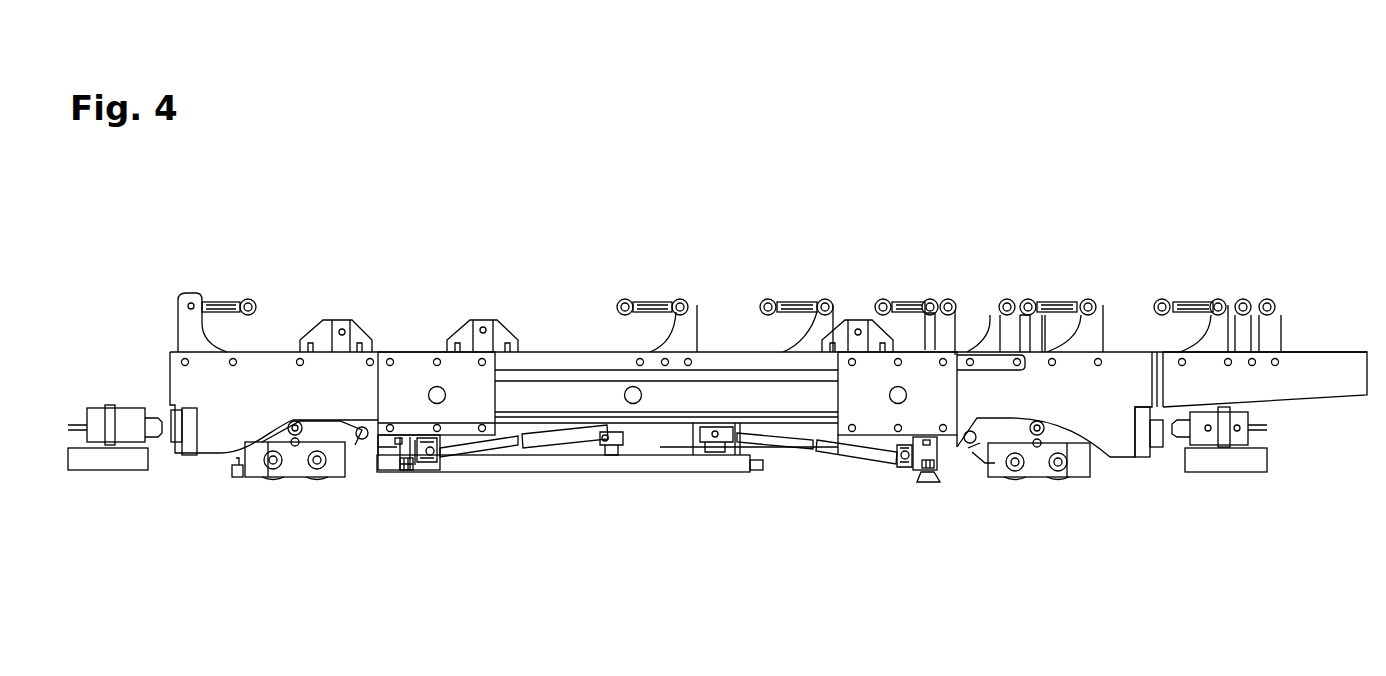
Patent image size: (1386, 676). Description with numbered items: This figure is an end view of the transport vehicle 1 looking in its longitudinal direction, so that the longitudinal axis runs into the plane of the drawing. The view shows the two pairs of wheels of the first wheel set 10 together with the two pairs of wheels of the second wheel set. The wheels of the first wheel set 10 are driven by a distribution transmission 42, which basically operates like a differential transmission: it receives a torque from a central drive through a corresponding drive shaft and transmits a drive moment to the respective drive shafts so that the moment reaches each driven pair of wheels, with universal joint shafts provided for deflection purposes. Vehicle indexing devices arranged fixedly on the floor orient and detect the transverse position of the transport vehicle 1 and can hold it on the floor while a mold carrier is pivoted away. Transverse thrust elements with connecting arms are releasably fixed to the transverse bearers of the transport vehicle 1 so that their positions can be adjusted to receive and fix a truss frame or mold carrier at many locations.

The transport vehicle 1 is at (800, 238).
The first wheel set 10 is at (392, 522).
The distribution transmission 42 is at (678, 438).